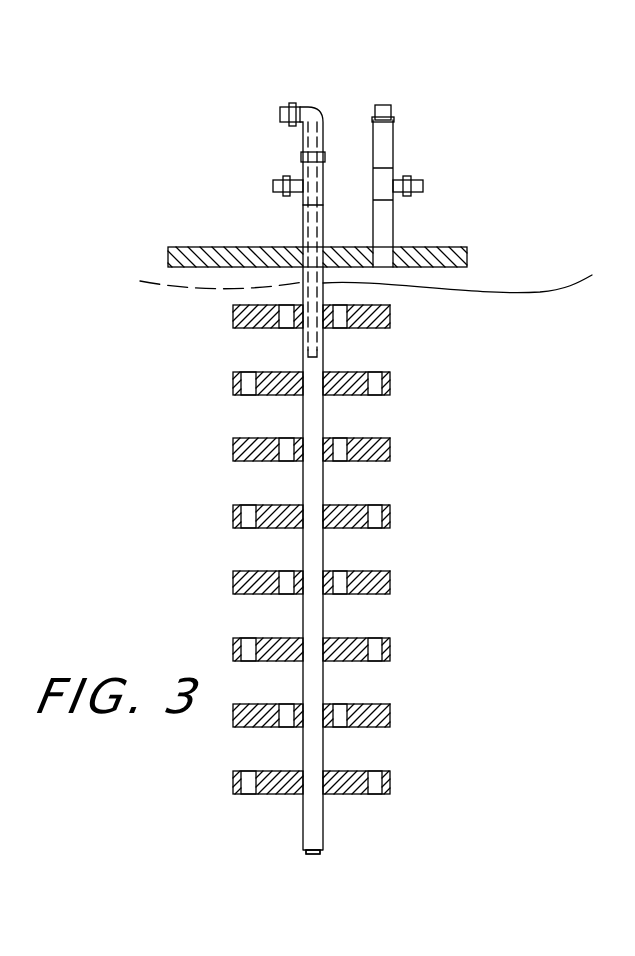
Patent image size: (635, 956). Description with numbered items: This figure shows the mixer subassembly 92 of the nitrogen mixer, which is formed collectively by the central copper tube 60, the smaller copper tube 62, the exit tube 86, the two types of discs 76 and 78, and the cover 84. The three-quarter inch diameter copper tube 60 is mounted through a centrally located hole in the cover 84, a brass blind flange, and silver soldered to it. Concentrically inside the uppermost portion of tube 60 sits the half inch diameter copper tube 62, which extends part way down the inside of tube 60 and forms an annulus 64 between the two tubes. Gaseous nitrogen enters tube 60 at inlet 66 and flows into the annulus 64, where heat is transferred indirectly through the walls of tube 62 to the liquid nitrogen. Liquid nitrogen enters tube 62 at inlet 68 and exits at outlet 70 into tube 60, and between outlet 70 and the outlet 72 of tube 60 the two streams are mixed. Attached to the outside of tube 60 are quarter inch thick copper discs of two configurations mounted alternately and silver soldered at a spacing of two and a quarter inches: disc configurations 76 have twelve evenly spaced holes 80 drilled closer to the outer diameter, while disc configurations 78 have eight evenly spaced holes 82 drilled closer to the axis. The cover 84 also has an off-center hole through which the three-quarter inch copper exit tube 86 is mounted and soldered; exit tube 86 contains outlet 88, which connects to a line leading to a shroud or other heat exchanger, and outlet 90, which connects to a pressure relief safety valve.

The copper tube 60 is at (302, 490).
The copper tube 62 is at (140, 281).
The annulus 64 is at (469, 272).
The inlet 66 is at (275, 181).
The inlet 68 is at (286, 105).
The outlet 70 is at (312, 360).
The outlet 72 is at (312, 854).
The disc configuration 76 is at (392, 388).
The disc configuration 78 is at (392, 320).
The holes 80 is at (377, 395).
The holes 82 is at (287, 329).
The cover 84 is at (178, 246).
The exit tube 86 is at (393, 222).
The outlet 88 is at (417, 175).
The outlet 90 is at (387, 105).
The mixer subassembly 92 is at (166, 188).